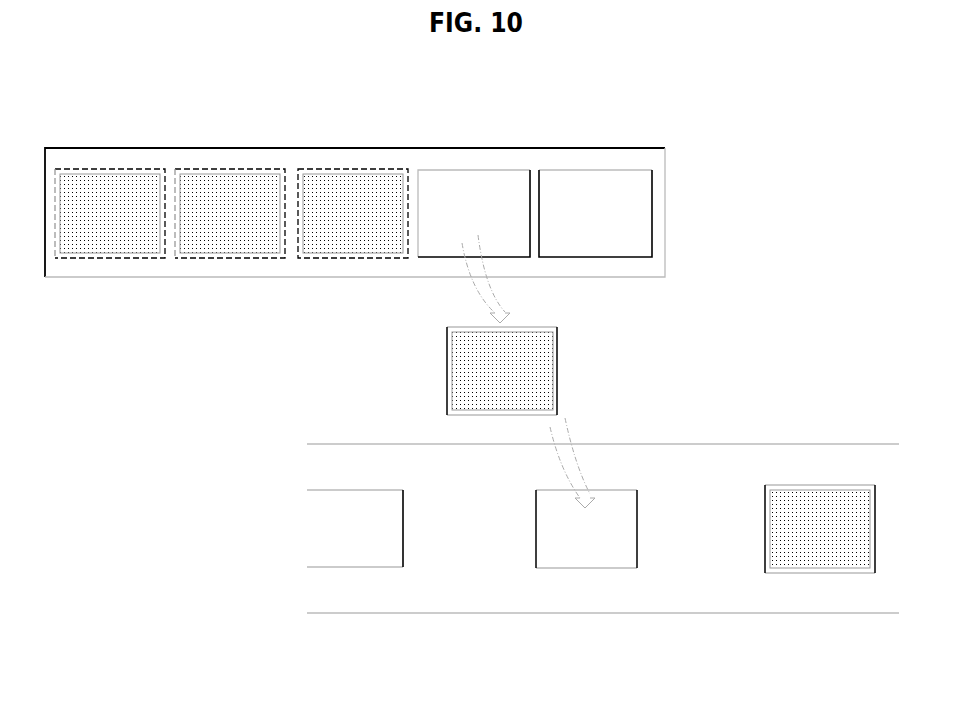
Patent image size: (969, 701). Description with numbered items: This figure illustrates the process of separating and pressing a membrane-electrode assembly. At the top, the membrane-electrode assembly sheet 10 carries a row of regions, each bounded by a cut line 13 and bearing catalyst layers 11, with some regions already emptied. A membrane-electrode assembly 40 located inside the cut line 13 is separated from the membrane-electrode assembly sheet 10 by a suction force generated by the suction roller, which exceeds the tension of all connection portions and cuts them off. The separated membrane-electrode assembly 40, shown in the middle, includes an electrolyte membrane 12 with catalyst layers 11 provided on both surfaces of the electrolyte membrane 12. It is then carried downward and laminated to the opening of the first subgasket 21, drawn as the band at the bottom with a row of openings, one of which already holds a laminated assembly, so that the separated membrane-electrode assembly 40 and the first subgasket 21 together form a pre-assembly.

The membrane-electrode assembly sheet 10 is at (268, 162).
The catalyst layers 11 is at (100, 250).
The electrolyte membrane 12 is at (447, 386).
The cut line 13 is at (112, 170).
The first subgasket 21 is at (468, 588).
The membrane-electrode assembly 40 is at (626, 439).